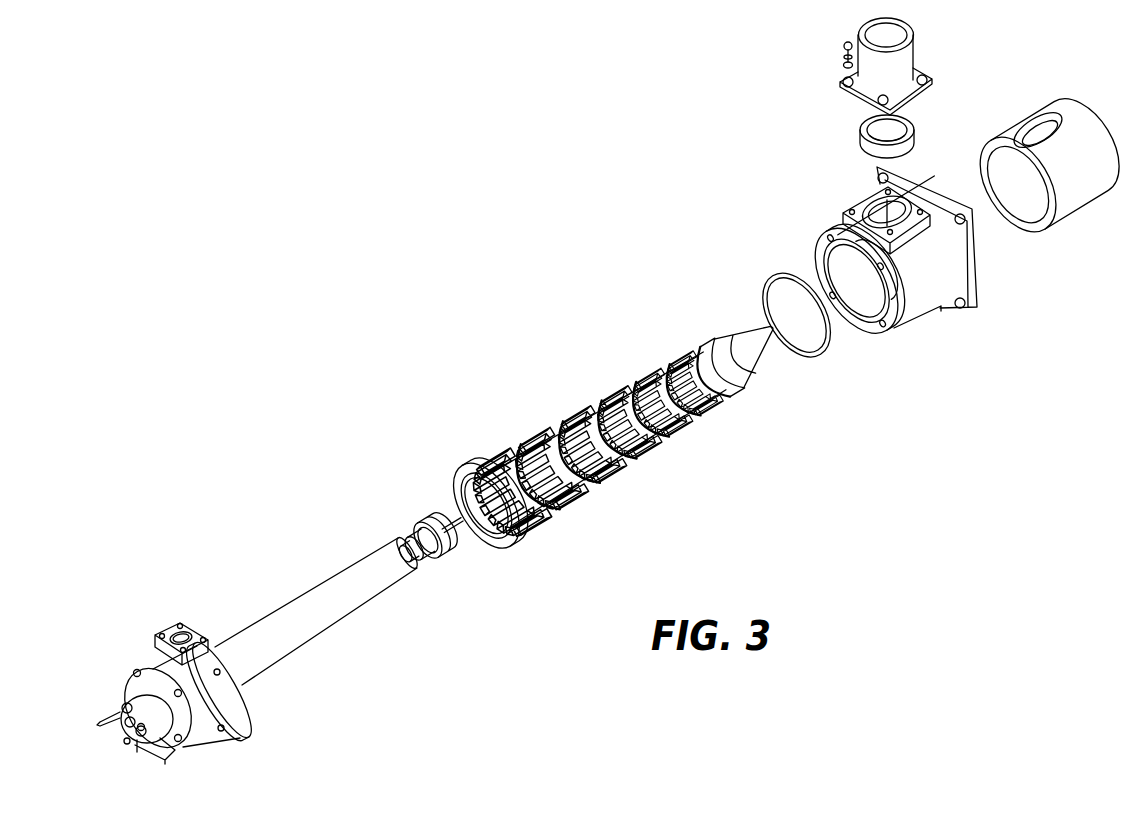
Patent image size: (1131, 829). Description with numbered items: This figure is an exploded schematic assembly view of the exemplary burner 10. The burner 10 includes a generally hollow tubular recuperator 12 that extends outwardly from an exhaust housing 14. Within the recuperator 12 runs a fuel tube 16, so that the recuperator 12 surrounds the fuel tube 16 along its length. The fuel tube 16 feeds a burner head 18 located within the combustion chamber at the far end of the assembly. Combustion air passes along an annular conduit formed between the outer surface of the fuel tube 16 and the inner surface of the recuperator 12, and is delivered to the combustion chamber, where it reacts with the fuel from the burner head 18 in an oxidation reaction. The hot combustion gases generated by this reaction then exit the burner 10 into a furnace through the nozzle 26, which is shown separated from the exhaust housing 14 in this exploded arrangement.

The burner 10 is at (463, 282).
The recuperator 12 is at (623, 372).
The exhaust housing 14 is at (932, 306).
The fuel tube 16 is at (341, 623).
The burner head 18 is at (443, 512).
The nozzle 26 is at (783, 330).